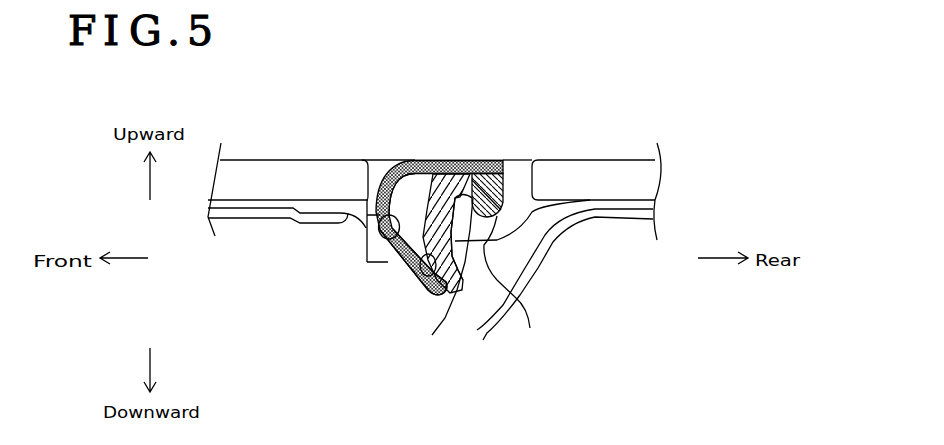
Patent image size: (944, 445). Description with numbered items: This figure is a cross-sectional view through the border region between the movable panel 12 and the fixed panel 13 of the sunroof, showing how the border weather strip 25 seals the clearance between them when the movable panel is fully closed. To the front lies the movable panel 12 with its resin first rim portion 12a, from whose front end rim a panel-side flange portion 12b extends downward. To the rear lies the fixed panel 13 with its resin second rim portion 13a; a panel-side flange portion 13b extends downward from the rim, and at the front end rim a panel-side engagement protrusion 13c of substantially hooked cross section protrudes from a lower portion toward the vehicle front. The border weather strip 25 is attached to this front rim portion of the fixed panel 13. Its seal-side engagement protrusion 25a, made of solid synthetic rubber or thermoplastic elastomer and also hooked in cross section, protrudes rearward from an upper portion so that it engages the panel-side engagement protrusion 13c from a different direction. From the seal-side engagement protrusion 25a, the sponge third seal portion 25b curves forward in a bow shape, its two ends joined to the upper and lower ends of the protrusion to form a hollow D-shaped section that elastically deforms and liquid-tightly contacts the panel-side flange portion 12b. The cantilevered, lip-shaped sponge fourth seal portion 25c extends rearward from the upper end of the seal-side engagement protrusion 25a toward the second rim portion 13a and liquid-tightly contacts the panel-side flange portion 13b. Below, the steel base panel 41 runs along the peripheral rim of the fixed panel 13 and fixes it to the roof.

The movable panel 12 is at (260, 158).
The first rim portion 12a is at (378, 158).
The panel-side flange portion 12b is at (367, 240).
The fixed panel 13 is at (602, 158).
The second rim portion 13a is at (513, 158).
The panel-side flange portion 13b is at (433, 272).
The panel-side engagement protrusion 13c is at (467, 303).
The border weather strip 25 is at (447, 160).
The seal-side engagement protrusion 25a is at (416, 278).
The third seal portion 25b is at (398, 163).
The fourth seal portion 25c is at (497, 163).
The base panel 41 is at (549, 272).